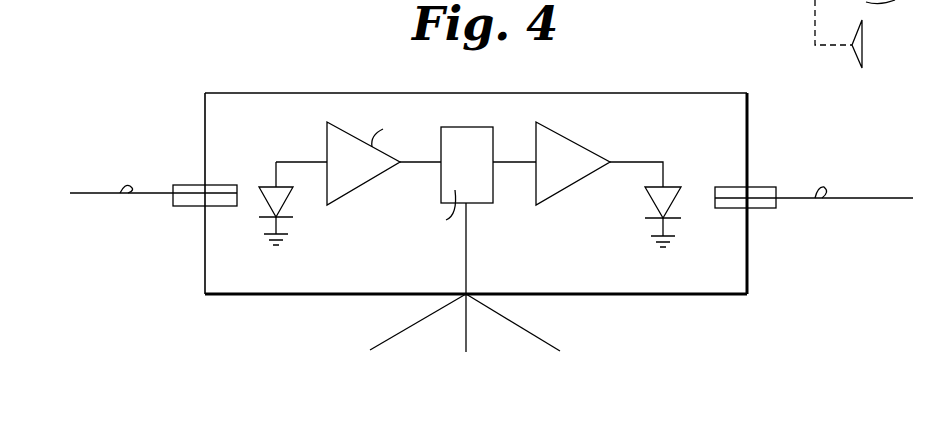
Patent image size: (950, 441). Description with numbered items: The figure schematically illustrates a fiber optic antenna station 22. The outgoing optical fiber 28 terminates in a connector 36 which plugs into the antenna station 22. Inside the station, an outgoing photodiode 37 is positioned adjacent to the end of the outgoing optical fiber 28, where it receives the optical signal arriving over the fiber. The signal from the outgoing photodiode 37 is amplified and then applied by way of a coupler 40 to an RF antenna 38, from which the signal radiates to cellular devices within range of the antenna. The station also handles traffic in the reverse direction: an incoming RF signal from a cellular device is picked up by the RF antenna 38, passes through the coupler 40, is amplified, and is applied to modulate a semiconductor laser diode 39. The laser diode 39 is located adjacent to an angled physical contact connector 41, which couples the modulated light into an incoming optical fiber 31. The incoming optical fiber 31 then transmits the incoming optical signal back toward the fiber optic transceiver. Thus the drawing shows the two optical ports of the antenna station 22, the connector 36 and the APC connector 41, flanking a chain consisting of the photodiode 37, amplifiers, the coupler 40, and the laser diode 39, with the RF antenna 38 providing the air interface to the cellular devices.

The antenna station 22 is at (660, 86).
The outgoing optical fiber 28 is at (145, 195).
The incoming optical fiber 31 is at (876, 198).
The connector 36 is at (183, 184).
The outgoing photodiode 37 is at (264, 186).
The RF antenna 38 is at (532, 337).
The semiconductor laser diode 39 is at (680, 186).
The coupler 40 is at (480, 126).
The angled physical contact (APC) connector 41 is at (768, 210).